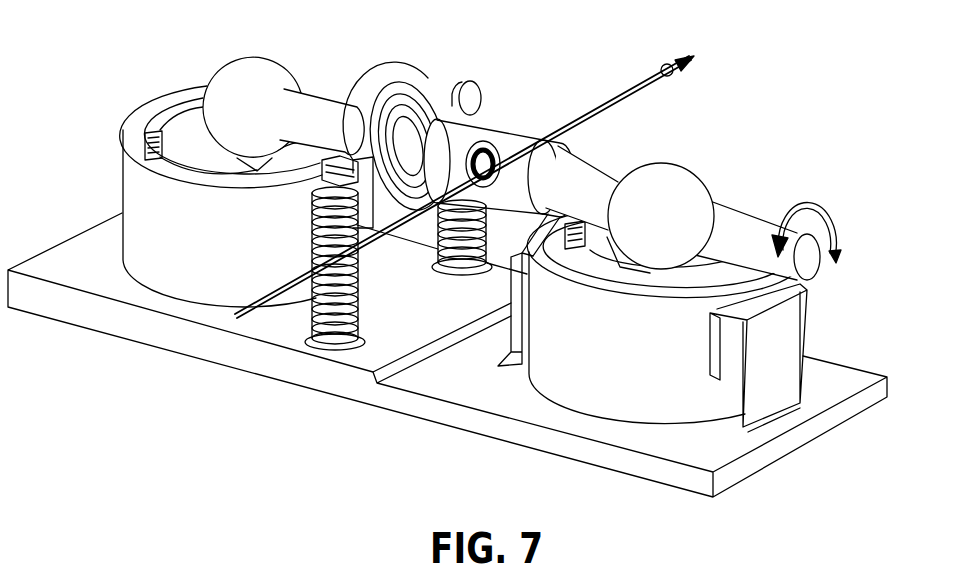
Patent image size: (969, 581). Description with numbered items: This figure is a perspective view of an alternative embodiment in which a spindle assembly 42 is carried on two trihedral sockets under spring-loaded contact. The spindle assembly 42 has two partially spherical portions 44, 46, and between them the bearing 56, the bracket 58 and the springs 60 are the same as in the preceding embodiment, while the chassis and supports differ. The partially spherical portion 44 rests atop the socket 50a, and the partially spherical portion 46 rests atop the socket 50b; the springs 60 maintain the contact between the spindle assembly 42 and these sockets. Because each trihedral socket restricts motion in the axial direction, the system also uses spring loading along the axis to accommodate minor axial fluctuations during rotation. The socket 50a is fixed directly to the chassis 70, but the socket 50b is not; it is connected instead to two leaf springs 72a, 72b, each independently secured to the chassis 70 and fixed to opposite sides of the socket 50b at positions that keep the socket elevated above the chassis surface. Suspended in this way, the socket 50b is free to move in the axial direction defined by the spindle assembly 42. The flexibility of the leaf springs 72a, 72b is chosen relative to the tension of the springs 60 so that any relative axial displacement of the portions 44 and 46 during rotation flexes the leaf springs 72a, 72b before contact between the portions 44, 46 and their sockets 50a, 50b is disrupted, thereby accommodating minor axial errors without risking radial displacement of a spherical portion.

The spindle assembly 42 is at (737, 223).
The partially spherical portion 44 is at (252, 68).
The partially spherical portion 46 is at (672, 187).
The socket 50a is at (147, 181).
The socket 50b is at (592, 387).
The bearing 56 is at (415, 118).
The bracket 58 is at (400, 78).
The springs 60 is at (350, 280).
The chassis 70 is at (312, 377).
The leaf spring 72a is at (513, 353).
The leaf spring 72b is at (782, 380).